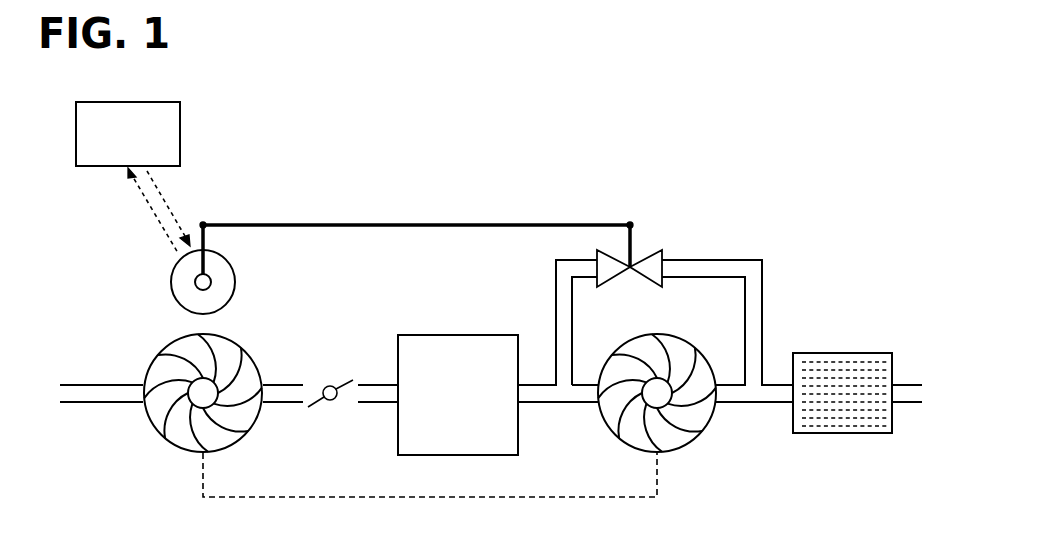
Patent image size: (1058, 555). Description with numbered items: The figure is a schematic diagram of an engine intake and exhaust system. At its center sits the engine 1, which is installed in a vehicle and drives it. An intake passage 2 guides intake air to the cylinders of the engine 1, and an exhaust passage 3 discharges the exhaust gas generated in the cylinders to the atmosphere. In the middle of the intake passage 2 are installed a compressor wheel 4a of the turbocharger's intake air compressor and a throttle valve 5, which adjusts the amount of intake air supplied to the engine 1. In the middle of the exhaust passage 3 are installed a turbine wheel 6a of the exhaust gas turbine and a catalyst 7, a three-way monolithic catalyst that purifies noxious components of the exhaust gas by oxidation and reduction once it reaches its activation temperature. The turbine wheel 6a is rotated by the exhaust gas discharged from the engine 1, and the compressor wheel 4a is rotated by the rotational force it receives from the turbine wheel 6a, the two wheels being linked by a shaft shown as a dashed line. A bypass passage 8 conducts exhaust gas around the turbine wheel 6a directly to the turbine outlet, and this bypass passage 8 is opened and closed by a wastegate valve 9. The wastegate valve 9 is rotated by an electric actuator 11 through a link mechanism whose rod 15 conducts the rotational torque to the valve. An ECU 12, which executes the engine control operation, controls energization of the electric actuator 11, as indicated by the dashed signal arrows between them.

The engine 1 is at (452, 335).
The intake passage 2 is at (93, 402).
The exhaust passage 3 is at (910, 402).
The compressor wheel 4a is at (173, 440).
The throttle valve 5 is at (328, 368).
The turbine wheel 6a is at (700, 425).
The catalyst 7 is at (858, 353).
The bypass passage 8 is at (724, 260).
The wastegate valve 9 is at (649, 250).
The electric actuator 11 is at (172, 283).
The ECU 12 is at (181, 130).
The rod 15 is at (388, 225).